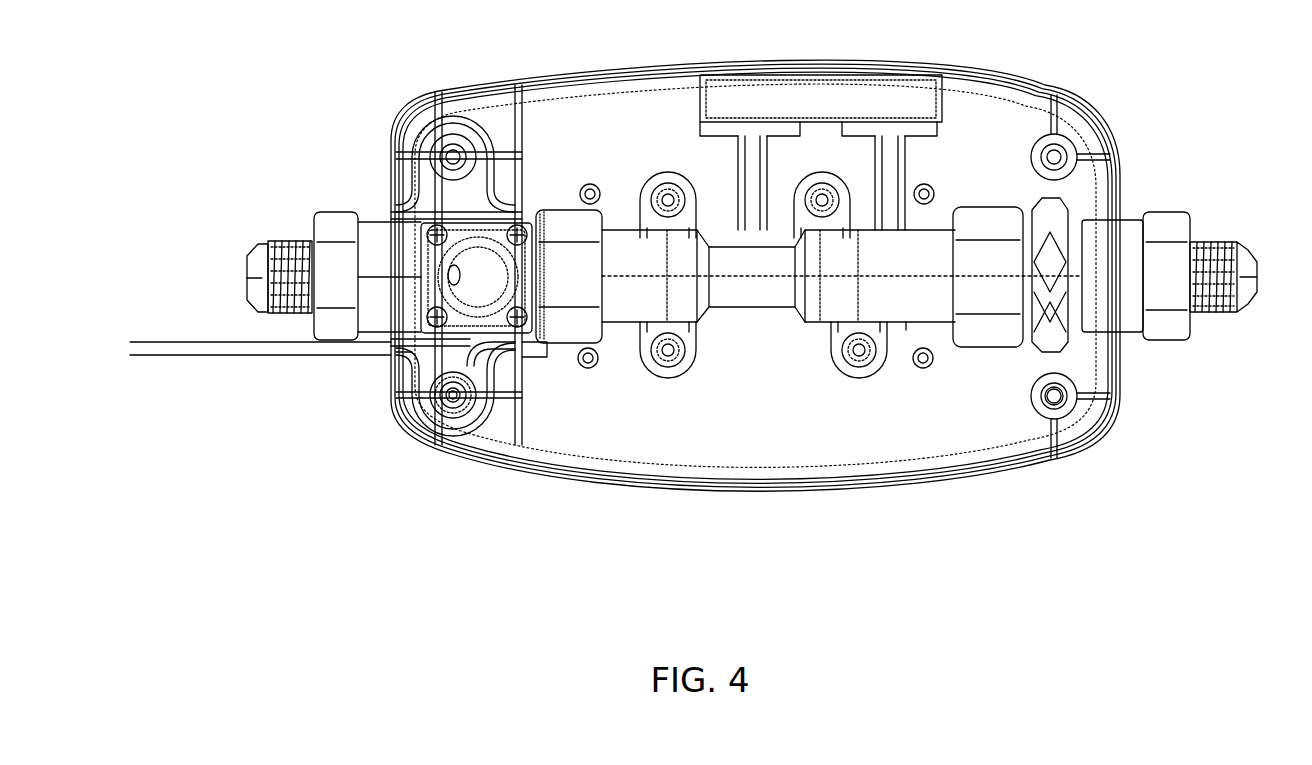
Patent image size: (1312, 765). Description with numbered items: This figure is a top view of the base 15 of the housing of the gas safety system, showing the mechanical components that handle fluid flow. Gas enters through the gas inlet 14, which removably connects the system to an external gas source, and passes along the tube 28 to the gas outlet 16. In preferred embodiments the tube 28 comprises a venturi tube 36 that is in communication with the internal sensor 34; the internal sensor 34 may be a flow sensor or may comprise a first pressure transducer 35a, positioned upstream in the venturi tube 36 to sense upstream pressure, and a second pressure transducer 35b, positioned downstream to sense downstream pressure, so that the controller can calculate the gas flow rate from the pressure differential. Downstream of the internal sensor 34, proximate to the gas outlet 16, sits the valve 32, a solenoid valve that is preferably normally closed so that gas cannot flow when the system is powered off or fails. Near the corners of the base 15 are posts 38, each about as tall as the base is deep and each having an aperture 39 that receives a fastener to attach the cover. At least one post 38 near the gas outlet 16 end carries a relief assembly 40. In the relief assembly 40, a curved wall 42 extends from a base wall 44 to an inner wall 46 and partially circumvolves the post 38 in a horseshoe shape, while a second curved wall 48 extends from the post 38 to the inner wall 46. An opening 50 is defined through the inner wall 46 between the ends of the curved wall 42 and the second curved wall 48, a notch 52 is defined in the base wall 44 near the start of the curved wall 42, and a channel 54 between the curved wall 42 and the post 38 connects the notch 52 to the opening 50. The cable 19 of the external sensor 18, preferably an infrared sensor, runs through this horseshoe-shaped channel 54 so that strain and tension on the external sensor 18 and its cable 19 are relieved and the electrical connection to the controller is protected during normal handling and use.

The gas inlet 14 is at (1224, 229).
The base 15 is at (1010, 478).
The gas outlet 16 is at (283, 233).
The external sensor 18 is at (190, 357).
The cable 19 is at (437, 400).
The tube 28 is at (908, 322).
The valve 32 is at (460, 262).
The internal sensor 34 is at (747, 237).
The first pressure transducer 35a is at (888, 232).
The second pressure transducer 35b is at (763, 230).
The venturi tube 36 is at (748, 325).
The post 38 is at (452, 404).
The aperture 39 is at (1058, 398).
The relief assembly 40 is at (484, 432).
The curved wall 42 is at (440, 412).
The base wall 44 is at (398, 358).
The inner wall 46 is at (494, 345).
The second curved wall 48 is at (520, 362).
The opening 50 is at (527, 207).
The notch 52 is at (390, 205).
The channel 54 is at (443, 114).